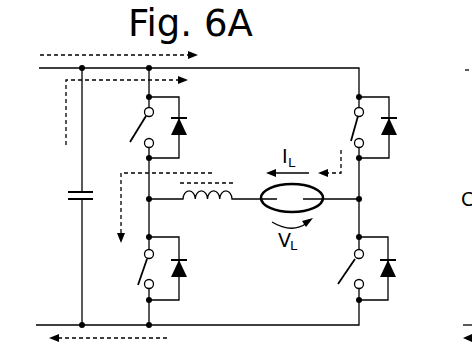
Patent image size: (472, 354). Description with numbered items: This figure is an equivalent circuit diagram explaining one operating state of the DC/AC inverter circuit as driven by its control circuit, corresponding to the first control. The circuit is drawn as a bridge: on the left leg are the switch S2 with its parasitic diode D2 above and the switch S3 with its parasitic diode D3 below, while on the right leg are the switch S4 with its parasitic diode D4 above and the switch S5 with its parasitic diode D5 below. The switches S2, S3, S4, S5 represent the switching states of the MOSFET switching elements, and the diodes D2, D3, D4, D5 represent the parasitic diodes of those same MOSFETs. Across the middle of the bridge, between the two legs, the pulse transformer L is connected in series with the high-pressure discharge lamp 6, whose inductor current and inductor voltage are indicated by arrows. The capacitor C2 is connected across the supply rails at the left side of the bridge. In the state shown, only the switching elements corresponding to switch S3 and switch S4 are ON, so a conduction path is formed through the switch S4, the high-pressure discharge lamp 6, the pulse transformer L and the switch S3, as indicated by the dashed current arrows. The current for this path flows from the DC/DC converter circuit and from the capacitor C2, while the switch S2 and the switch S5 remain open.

The high-pressure discharge lamp 6 is at (268, 184).
The switch S2 is at (129, 128).
The parasitic diode D2 is at (184, 127).
The switch S3 is at (130, 269).
The parasitic diode D3 is at (182, 268).
The switch S4 is at (343, 128).
The parasitic diode D4 is at (393, 127).
The switch S5 is at (340, 269).
The parasitic diode D5 is at (393, 268).
The capacitor C2 is at (64, 195).
The pulse transformer L is at (213, 211).